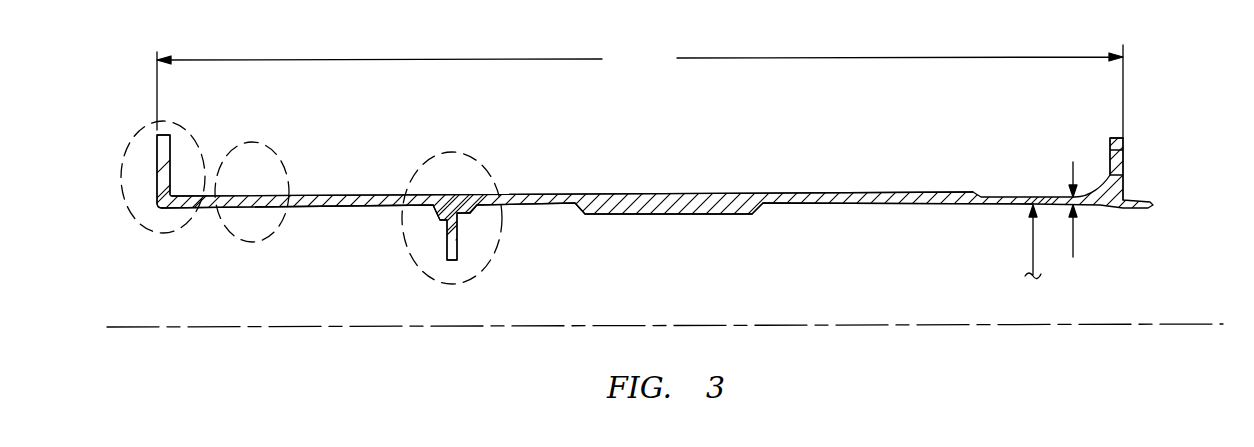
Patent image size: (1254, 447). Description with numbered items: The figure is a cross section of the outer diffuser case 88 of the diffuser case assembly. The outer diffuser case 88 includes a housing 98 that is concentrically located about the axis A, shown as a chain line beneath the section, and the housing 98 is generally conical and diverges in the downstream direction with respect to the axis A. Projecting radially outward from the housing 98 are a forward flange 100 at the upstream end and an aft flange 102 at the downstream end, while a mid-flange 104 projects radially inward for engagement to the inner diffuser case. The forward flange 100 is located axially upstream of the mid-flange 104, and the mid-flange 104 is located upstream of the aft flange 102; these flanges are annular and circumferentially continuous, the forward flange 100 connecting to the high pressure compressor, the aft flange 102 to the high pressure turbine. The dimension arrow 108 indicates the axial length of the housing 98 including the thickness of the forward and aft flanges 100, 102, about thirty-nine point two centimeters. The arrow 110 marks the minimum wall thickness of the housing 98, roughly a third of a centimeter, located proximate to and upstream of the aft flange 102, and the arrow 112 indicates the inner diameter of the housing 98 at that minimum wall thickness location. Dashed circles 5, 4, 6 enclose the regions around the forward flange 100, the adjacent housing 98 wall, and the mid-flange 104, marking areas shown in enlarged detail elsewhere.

The outer diffuser case 88 is at (919, 144).
The housing 98 is at (638, 193).
The forward flange 100 is at (170, 153).
The aft flange 102 is at (1123, 145).
The mid-flange 104 is at (457, 250).
The axial length 108 is at (640, 91).
The minimum wall thickness 110 is at (1073, 250).
The inner diameter 112 is at (1033, 252).
The detail region 5 is at (163, 233).
The detail region 4 is at (242, 241).
The detail region 6 is at (400, 229).
The axis A is at (706, 326).